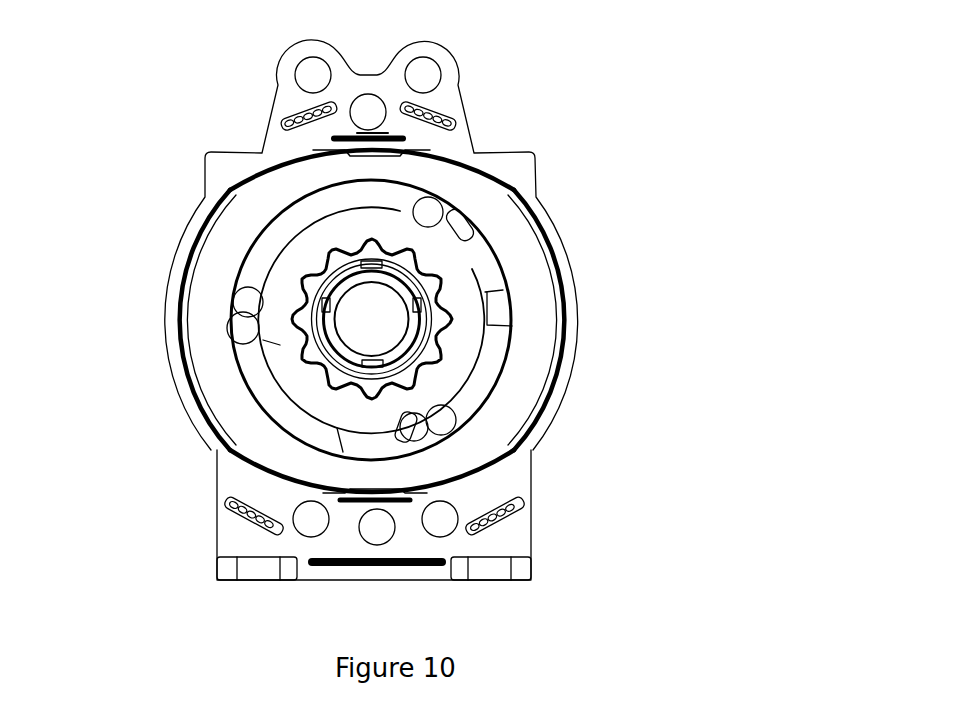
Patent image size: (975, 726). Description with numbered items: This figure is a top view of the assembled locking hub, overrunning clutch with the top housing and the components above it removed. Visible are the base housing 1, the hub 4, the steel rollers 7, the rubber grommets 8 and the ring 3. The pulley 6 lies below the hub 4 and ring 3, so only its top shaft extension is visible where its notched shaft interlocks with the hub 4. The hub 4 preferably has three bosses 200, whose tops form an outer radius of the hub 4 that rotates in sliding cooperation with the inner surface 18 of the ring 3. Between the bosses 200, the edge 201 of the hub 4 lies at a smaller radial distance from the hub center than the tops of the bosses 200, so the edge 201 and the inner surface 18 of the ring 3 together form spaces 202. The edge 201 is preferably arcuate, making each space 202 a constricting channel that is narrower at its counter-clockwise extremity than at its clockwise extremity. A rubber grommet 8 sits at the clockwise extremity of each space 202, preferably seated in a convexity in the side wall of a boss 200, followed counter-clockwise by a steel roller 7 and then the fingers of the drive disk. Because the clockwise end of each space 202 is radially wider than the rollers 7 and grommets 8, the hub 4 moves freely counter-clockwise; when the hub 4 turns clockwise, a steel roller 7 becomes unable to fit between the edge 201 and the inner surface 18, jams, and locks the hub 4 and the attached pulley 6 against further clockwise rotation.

The base housing 1 is at (523, 530).
The ring 3 is at (477, 450).
The hub 4 is at (327, 402).
The pulley 6 is at (417, 372).
The steel rollers 7 is at (445, 199).
The rubber grommets 8 is at (463, 227).
The inner surface of ring 18 is at (507, 364).
The bosses 200 is at (487, 260).
The edge of hub 201 is at (488, 323).
The spaces 202 is at (387, 197).